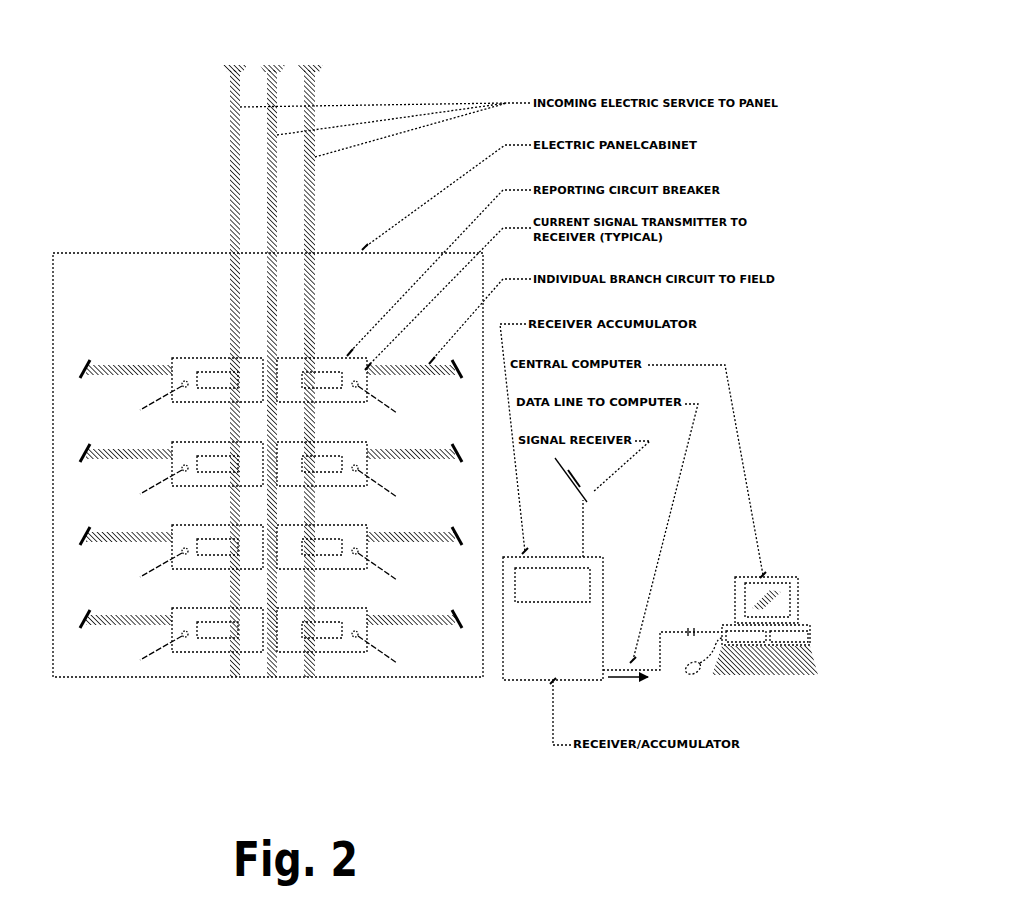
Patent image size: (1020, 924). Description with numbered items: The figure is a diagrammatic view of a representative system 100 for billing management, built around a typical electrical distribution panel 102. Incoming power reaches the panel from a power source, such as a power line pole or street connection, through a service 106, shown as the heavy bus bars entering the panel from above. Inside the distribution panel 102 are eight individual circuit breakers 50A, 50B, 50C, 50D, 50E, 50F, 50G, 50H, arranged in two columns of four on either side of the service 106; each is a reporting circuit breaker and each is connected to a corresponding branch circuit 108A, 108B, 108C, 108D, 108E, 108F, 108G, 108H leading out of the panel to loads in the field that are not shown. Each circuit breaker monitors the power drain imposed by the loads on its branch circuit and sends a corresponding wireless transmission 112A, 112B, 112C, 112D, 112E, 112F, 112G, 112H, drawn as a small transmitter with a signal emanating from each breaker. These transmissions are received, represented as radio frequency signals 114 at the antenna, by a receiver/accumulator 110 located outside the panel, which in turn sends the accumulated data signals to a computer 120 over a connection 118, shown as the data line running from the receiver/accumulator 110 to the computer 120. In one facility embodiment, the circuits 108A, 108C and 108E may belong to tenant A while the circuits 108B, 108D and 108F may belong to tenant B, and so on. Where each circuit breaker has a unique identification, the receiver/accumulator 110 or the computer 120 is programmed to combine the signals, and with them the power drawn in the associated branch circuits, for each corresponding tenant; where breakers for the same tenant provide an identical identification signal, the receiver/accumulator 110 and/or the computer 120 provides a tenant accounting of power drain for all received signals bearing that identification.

The system 100 is at (326, 750).
The distribution panel 102 is at (187, 267).
The service 106 is at (224, 133).
The circuit breaker 50A is at (210, 360).
The circuit breaker 50B is at (208, 442).
The circuit breaker 50C is at (208, 525).
The circuit breaker 50D is at (208, 608).
The circuit breaker 50E is at (332, 367).
The circuit breaker 50F is at (366, 444).
The circuit breaker 50G is at (368, 527).
The circuit breaker 50H is at (368, 610).
The branch circuit 108A is at (128, 365).
The branch circuit 108B is at (130, 448).
The branch circuit 108C is at (130, 531).
The branch circuit 108D is at (130, 614).
The branch circuit 108E is at (415, 367).
The branch circuit 108F is at (447, 449).
The branch circuit 108G is at (447, 532).
The branch circuit 108H is at (447, 615).
The wireless transmission 112A is at (160, 397).
The wireless transmission 112B is at (155, 479).
The wireless transmission 112C is at (158, 562).
The wireless transmission 112D is at (160, 645).
The wireless transmission 112E is at (380, 400).
The wireless transmission 112F is at (380, 483).
The wireless transmission 112G is at (380, 566).
The wireless transmission 112H is at (380, 650).
The receiver/accumulator 110 is at (568, 680).
The radio frequency signals 114 is at (567, 464).
The connection 118 is at (682, 632).
The computer 120 is at (800, 622).